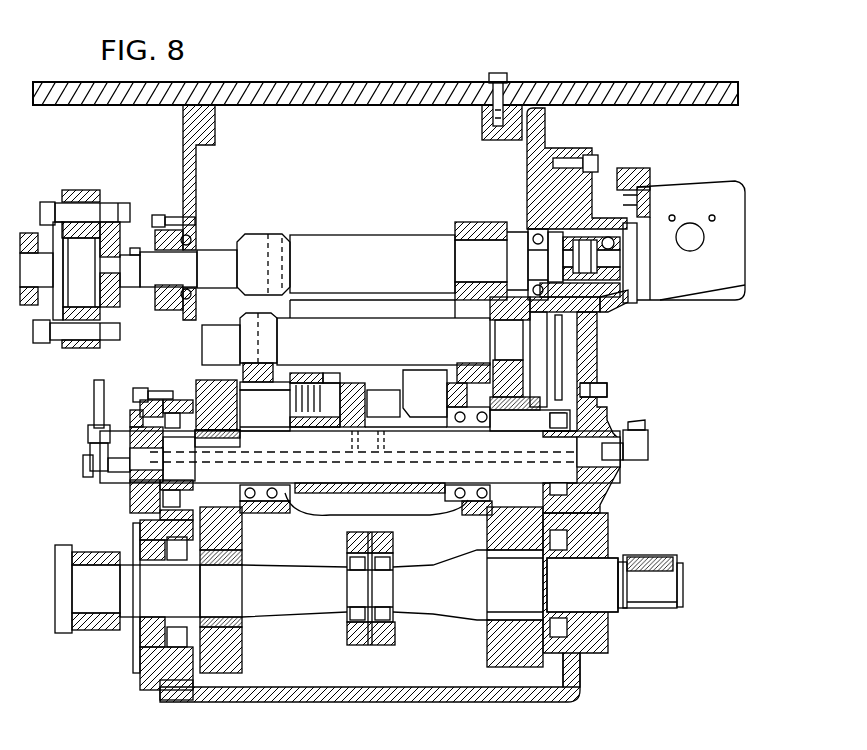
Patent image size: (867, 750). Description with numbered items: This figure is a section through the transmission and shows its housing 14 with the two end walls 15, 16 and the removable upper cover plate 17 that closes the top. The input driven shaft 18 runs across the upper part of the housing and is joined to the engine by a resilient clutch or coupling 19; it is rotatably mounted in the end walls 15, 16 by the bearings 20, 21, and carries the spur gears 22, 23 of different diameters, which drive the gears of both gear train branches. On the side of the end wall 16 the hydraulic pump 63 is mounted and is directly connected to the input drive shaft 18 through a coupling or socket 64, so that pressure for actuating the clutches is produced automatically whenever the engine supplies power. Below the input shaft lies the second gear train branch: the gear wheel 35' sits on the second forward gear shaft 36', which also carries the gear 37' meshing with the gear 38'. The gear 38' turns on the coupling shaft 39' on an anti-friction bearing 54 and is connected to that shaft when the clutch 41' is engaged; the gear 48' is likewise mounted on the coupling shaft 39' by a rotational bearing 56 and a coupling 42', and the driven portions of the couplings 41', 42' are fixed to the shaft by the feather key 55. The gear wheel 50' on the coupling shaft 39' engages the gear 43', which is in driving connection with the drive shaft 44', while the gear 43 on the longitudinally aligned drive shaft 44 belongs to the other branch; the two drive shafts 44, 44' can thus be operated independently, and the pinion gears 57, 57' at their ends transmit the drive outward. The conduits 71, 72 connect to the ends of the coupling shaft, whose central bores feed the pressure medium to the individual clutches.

The housing 14 is at (325, 702).
The end wall 15 is at (183, 160).
The end wall 16 is at (550, 152).
The upper cover plate 17 is at (280, 86).
The input driven shaft 18 is at (340, 242).
The resilient clutch or coupling 19 is at (33, 213).
The bearing 20 is at (197, 248).
The bearing 21 is at (530, 234).
The spur gear 22 is at (254, 236).
The spur gear 23 is at (466, 222).
The gear wheel 35' is at (530, 375).
The second forward gear shaft 36' is at (383, 330).
The gear 37' is at (262, 329).
The gear 38' is at (265, 358).
The coupling shaft 39' is at (360, 436).
The clutch 41' is at (327, 376).
The coupling 42' is at (435, 370).
The gear 43 is at (500, 589).
The gear 43' is at (273, 596).
The drive shaft 44 is at (594, 560).
The drive shaft 44' is at (149, 564).
The gear 48' is at (468, 371).
The gear wheel 50' is at (217, 389).
The anti-friction bearing 54 is at (278, 500).
The feather key 55 is at (410, 496).
The rotational bearing 56 is at (470, 516).
The pinion gear 57 is at (657, 557).
The pinion gear 57' is at (87, 611).
The hydraulic pump 63 is at (708, 292).
The coupling or socket 64 is at (607, 300).
The conduit 71 is at (95, 404).
The conduit 72 is at (611, 445).